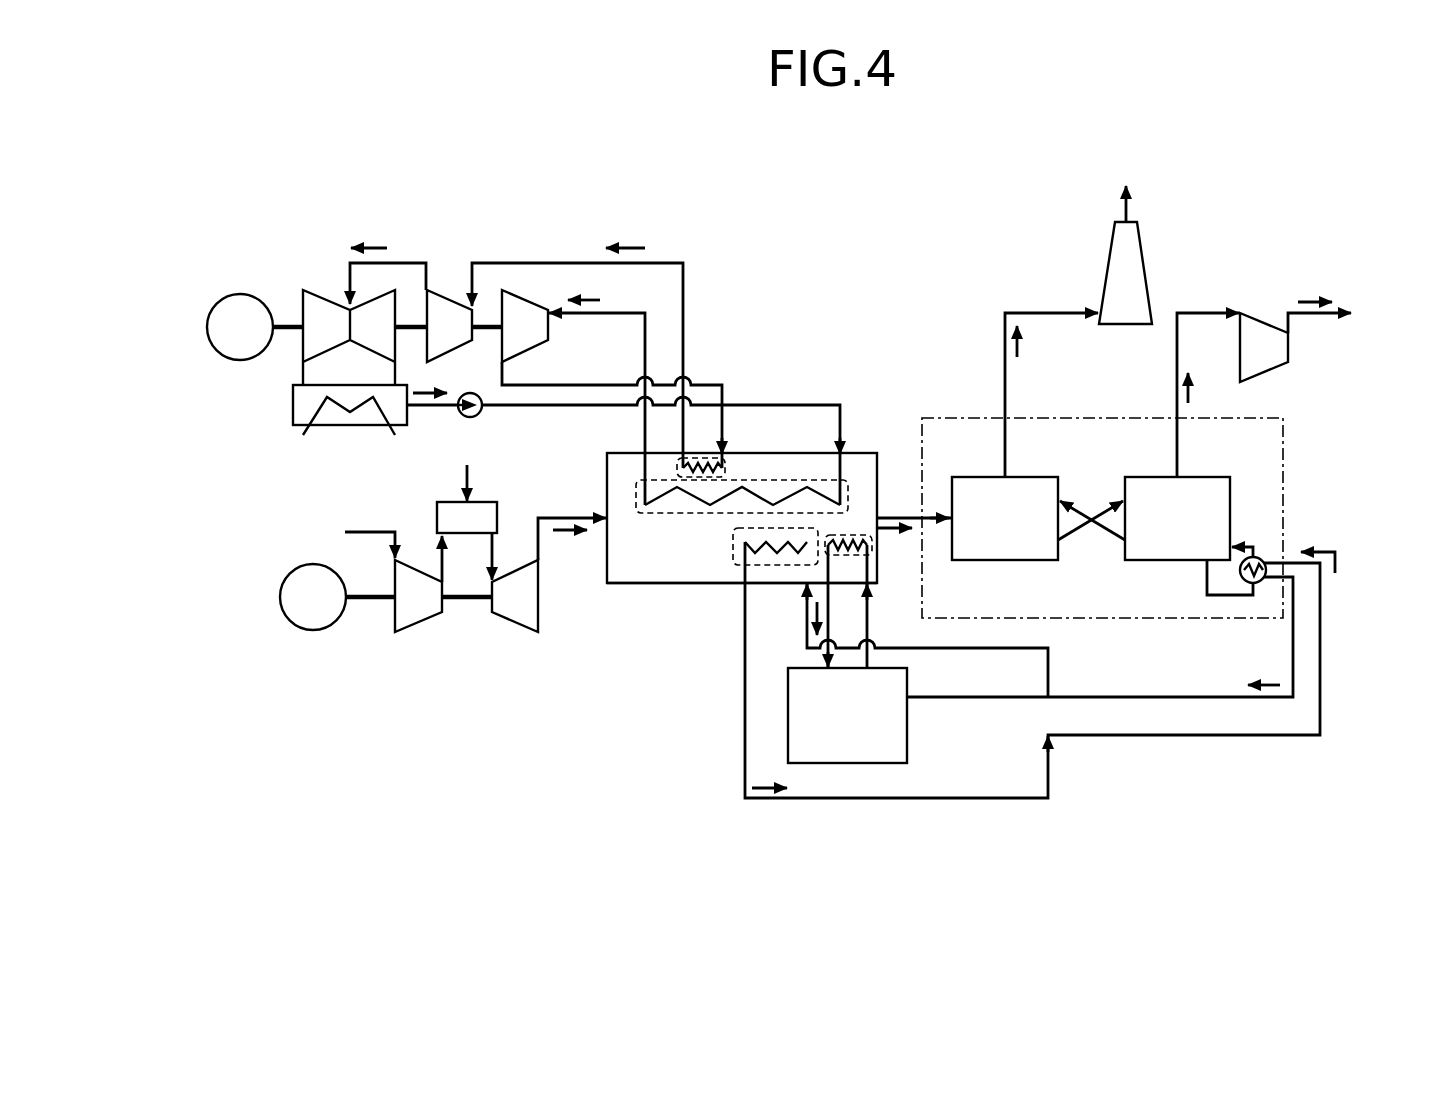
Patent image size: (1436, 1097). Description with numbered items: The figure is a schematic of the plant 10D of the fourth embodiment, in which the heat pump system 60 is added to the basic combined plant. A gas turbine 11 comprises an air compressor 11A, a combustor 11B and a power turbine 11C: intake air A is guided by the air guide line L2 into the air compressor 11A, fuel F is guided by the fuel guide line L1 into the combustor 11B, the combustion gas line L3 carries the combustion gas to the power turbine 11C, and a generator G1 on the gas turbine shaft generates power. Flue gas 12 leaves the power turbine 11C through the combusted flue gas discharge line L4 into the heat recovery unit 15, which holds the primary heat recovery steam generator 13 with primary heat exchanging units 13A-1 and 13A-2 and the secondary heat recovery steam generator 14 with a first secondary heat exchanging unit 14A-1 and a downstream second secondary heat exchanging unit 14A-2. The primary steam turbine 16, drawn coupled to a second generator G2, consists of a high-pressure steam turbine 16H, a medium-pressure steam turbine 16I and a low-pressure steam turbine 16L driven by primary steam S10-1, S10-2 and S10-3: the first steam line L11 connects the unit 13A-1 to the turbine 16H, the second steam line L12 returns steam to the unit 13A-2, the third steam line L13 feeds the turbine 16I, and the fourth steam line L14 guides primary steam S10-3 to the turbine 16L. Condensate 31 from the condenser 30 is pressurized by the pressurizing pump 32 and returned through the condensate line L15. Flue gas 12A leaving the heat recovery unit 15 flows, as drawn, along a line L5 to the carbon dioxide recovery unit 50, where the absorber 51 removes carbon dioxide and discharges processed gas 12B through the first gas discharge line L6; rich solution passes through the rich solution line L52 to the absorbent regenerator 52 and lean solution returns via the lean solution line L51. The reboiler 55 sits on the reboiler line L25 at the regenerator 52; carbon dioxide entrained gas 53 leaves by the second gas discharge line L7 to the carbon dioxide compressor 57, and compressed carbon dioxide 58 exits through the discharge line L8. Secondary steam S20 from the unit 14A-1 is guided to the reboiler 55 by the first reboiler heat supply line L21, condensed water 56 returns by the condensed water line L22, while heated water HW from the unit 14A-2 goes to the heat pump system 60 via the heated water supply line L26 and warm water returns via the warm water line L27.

The plant 10D is at (889, 224).
The gas turbine 11 is at (558, 703).
The air compressor 11A is at (420, 625).
The combustor 11B is at (468, 533).
The power turbine 11C is at (515, 625).
The flue gas 12 is at (569, 563).
The flue gas 12A is at (893, 530).
The processed gas 12B is at (1130, 207).
The primary heat recovery steam generator 13 is at (741, 465).
The primary heat exchanging unit 13A-1 is at (797, 480).
The primary heat exchanging unit 13A-2 is at (703, 457).
The secondary heat recovery steam generator 14 is at (736, 572).
The first secondary heat exchanging unit 14A-1 is at (777, 565).
The second secondary heat exchanging unit 14A-2 is at (855, 533).
The heat recovery unit 15 is at (630, 584).
The primary steam turbine 16 is at (412, 192).
The low-pressure steam turbine 16L is at (380, 293).
The medium-pressure steam turbine 16I is at (447, 295).
The high-pressure steam turbine 16H is at (527, 298).
The condenser 30 is at (293, 405).
The condensate 31 is at (447, 390).
The pressurizing pump 32 is at (483, 408).
The CO2 recovery unit 50 is at (1287, 437).
The CO2 absorber 51 is at (1027, 476).
The absorbent regenerator 52 is at (1193, 476).
The CO2 entrained gas 53 is at (1190, 397).
The reboiler 55 is at (1266, 558).
The condensed water 56 is at (1268, 690).
The CO2 compressor 57 is at (1262, 317).
The compressed CO2 58 is at (1318, 302).
The heat pump system 60 is at (848, 765).
The generator G1 is at (313, 597).
The generator G2 is at (240, 327).
The intake air A is at (359, 539).
The fuel F is at (467, 470).
The heated water HW is at (812, 618).
The fuel guide line L1 is at (468, 473).
The air guide line L2 is at (371, 530).
The combustion gas line L3 is at (493, 553).
The combusted flue gas discharge line L4 is at (565, 517).
The exhaust gas line L5 is at (897, 515).
The first gas discharge line L6 is at (1042, 311).
The second gas discharge line L7 is at (1202, 311).
The discharge line L8 is at (1318, 320).
The first steam line L11 is at (645, 327).
The second steam line L12 is at (577, 385).
The third steam line L13 is at (683, 275).
The fourth steam line L14 is at (388, 260).
The condensate line L15 is at (580, 407).
The first reboiler heat supply line L21 is at (1127, 737).
The condensed water line L22 is at (1187, 700).
The reboiler line L25 is at (1203, 578).
The heated water supply line L26 is at (803, 620).
The warm water line L27 is at (830, 623).
The lean solution line L51 is at (1110, 537).
The rich solution line L52 is at (1097, 505).
The primary steam S10-1 is at (590, 298).
The primary steam S10-2 is at (630, 246).
The primary steam S10-3 is at (372, 247).
The secondary steam S20 is at (765, 795).